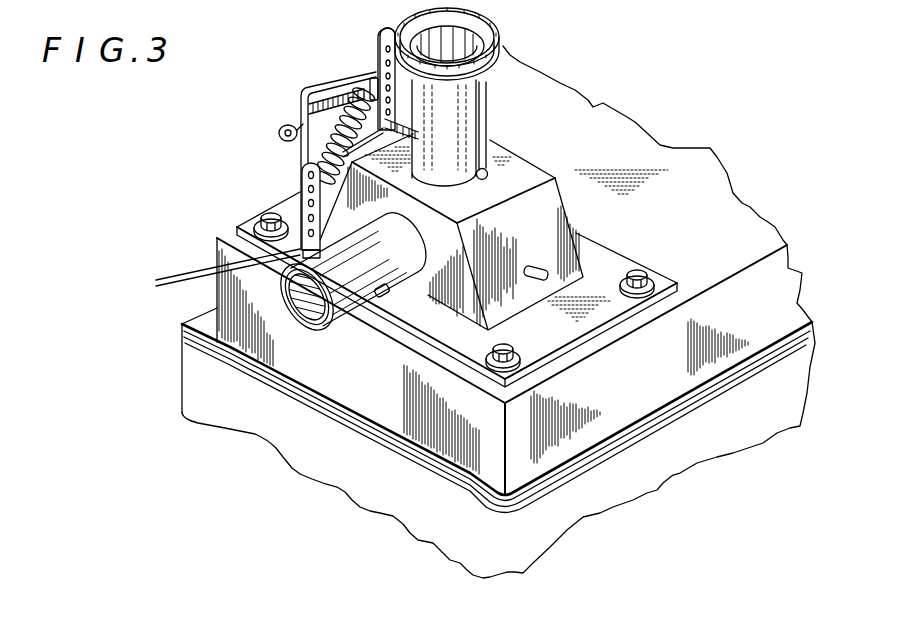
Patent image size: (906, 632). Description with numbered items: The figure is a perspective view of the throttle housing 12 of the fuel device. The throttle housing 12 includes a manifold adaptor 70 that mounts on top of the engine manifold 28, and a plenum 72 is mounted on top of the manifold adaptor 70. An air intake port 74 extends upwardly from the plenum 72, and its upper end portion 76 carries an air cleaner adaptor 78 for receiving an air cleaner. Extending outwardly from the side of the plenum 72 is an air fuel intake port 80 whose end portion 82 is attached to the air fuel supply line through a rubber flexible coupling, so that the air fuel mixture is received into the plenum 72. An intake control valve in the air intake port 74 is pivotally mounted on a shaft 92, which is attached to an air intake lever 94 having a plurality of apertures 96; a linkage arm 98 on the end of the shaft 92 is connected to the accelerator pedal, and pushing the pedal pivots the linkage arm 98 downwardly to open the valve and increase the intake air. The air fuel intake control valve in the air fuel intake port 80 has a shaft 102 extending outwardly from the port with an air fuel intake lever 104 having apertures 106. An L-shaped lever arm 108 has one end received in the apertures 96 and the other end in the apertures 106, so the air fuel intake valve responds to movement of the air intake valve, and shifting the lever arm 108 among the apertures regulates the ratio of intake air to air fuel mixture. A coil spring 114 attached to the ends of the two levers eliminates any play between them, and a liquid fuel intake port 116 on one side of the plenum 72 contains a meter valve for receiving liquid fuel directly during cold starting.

The throttle housing 12 is at (548, 138).
The engine manifold 28 is at (509, 498).
The manifold adaptor 70 is at (612, 270).
The plenum 72 is at (556, 199).
The air intake port 74 is at (484, 129).
The upper end portion 76 is at (486, 88).
The air cleaner adaptor 78 is at (496, 49).
The air fuel intake port 80 is at (413, 282).
The end portion 82 is at (343, 310).
The shaft 92 is at (380, 47).
The air intake lever 94 is at (386, 27).
The apertures 96 is at (364, 85).
The linkage arm 98 is at (279, 133).
The shaft 102 is at (283, 271).
The air fuel intake lever 104 is at (301, 181).
The apertures 106 is at (210, 273).
The L-shaped lever arm 108 is at (318, 84).
The coil spring 114 is at (300, 102).
The liquid fuel intake port 116 is at (557, 266).